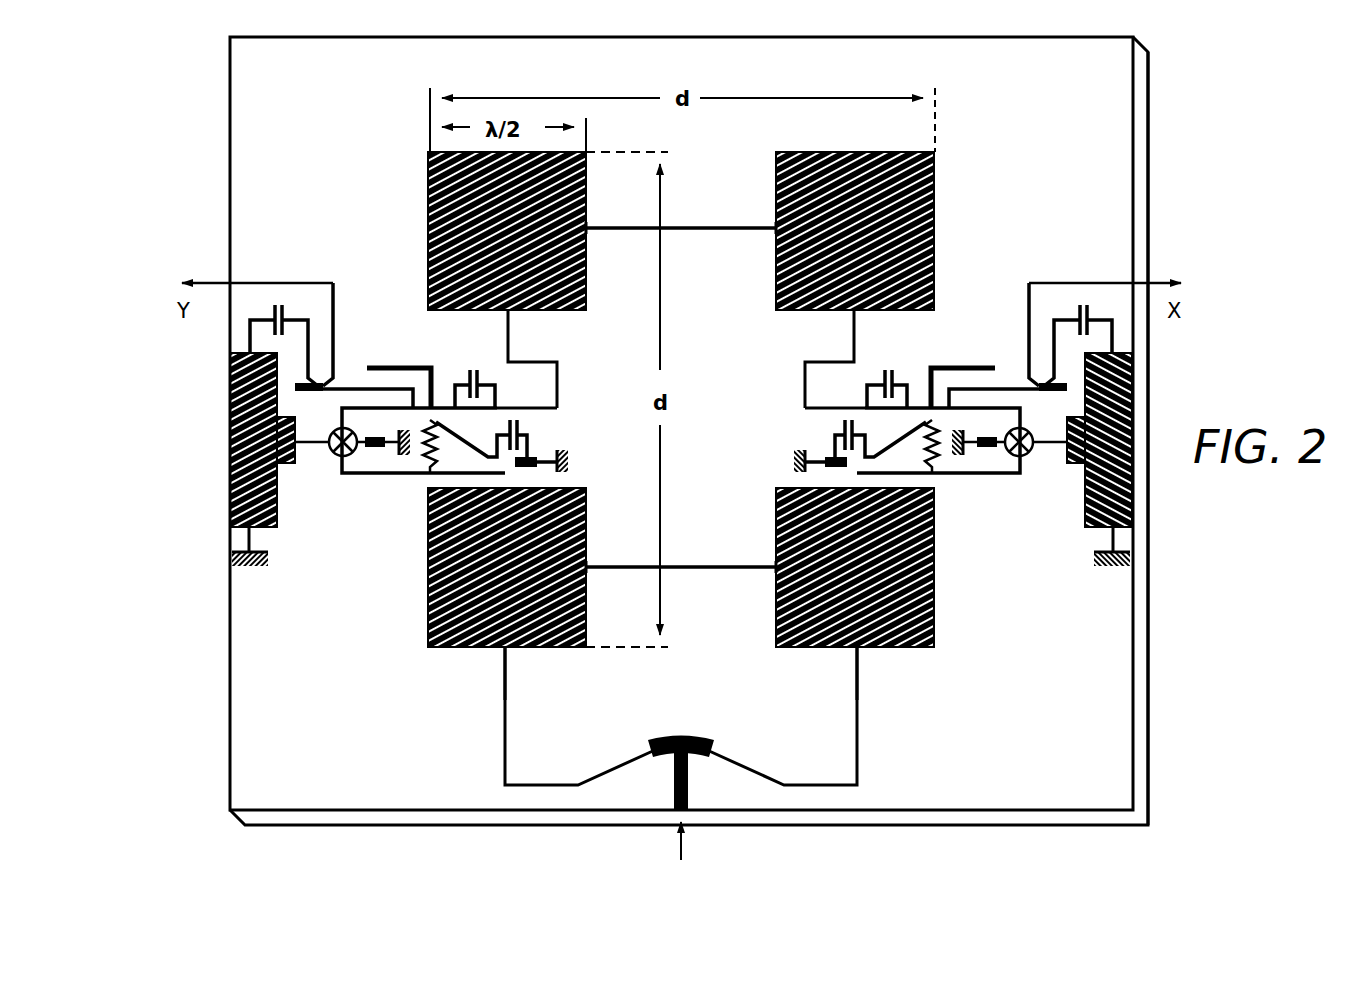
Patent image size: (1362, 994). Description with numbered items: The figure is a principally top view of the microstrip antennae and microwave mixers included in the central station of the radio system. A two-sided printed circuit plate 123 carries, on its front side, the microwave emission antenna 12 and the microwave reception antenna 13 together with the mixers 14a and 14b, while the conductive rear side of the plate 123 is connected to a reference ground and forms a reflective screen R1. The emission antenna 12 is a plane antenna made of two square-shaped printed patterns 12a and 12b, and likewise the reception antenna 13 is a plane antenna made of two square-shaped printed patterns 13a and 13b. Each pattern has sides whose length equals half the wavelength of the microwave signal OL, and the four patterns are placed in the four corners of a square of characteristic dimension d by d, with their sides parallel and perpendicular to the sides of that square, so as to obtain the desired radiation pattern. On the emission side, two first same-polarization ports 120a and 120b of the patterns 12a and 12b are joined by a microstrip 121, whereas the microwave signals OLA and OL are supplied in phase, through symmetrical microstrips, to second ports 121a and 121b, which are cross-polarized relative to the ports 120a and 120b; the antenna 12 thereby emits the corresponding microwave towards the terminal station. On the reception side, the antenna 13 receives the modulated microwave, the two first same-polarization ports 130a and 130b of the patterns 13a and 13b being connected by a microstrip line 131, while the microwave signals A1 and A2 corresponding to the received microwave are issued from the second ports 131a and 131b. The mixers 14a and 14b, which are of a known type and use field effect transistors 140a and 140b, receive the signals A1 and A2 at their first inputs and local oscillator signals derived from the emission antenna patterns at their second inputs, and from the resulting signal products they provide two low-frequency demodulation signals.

The microwave emission antenna 12 is at (675, 636).
The square-shaped printed pattern 12a is at (428, 578).
The square-shaped printed pattern 12b is at (934, 578).
The first same-polarization port 120a is at (612, 555).
The first same-polarization port 120b is at (773, 566).
The microstrip 121 is at (718, 569).
The second port 121a is at (512, 648).
The second port 121b is at (852, 648).
The two-sided printed circuit plate 123 is at (1107, 749).
The microwave reception antenna 13 is at (678, 263).
The square-shaped printed pattern 13a is at (428, 203).
The square-shaped printed pattern 13b is at (934, 205).
The first same-polarization port 130a is at (588, 228).
The first same-polarization port 130b is at (775, 228).
The microstrip line 131 is at (726, 232).
The second port 131a is at (508, 311).
The second port 131b is at (852, 311).
The mixer 14a is at (431, 424).
The mixer 14b is at (914, 424).
The field effect transistor 140a is at (328, 455).
The field effect transistor 140b is at (1024, 453).
The reflective screen R1 is at (1153, 197).
The microwave signal A1 is at (508, 349).
The microwave signal A2 is at (855, 349).
The microwave signal OLA is at (681, 843).